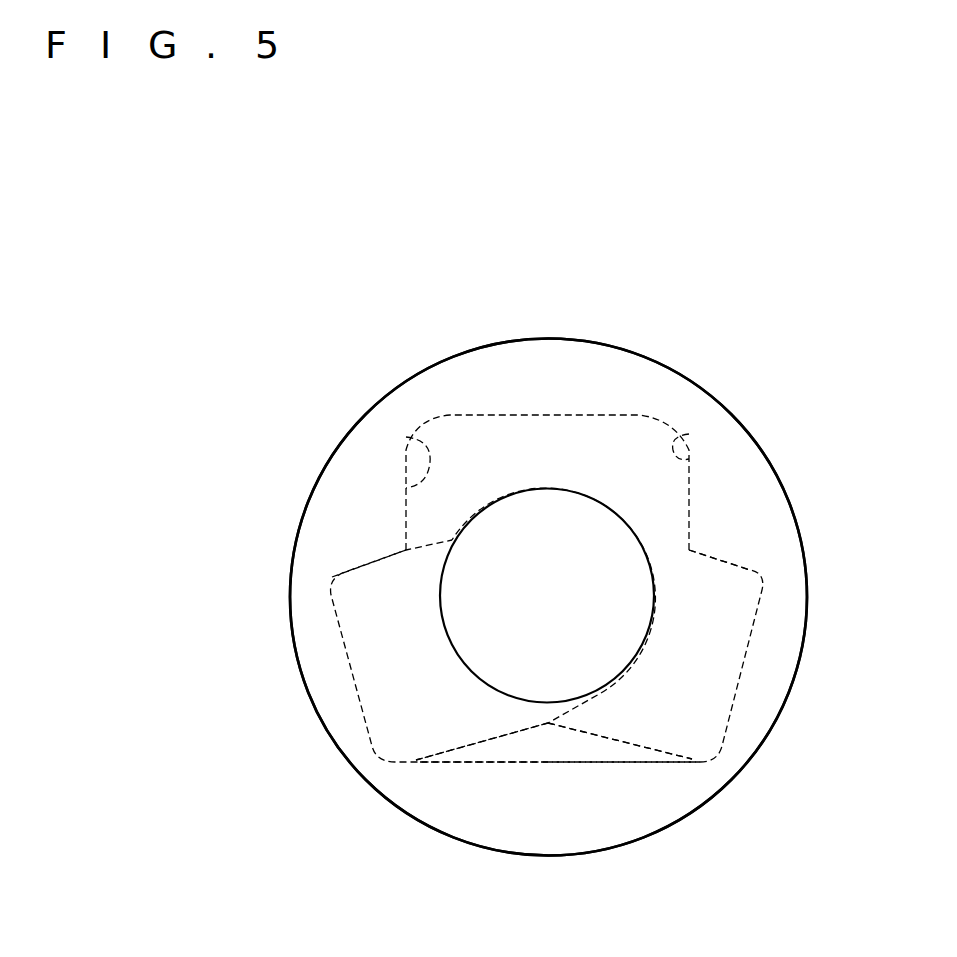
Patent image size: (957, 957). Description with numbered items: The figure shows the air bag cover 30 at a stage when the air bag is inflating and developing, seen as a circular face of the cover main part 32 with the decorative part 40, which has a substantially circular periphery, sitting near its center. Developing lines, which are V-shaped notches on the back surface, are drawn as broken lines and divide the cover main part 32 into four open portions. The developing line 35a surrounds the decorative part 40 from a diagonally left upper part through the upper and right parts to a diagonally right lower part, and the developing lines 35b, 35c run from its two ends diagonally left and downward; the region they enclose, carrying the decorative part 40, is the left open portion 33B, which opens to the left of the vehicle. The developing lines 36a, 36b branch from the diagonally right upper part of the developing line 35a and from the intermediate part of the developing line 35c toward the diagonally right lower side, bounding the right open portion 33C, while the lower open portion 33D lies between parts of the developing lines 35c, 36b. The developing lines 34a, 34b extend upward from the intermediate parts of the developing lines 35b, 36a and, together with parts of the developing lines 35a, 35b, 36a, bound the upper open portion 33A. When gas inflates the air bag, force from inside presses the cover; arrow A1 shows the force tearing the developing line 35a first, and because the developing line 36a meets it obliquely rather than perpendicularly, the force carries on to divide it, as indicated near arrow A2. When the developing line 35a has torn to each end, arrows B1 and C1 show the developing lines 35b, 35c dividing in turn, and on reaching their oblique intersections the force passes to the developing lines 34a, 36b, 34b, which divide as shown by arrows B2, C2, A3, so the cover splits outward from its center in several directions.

The air bag cover 30 is at (668, 362).
The cover main part 32 is at (563, 353).
The upper open portion 33A is at (468, 435).
The left open portion 33B is at (362, 664).
The right open portion 33C is at (727, 644).
The lower open portion 33D is at (547, 736).
The developing line 34a is at (423, 433).
The developing line 34b is at (677, 436).
The developing line 35a is at (657, 573).
The developing line 35b is at (455, 546).
The developing line 35c is at (450, 750).
The developing line 36a is at (707, 556).
The developing line 36b is at (667, 753).
The decorative part 40 is at (474, 606).
The arrow A1 is at (640, 507).
The arrow A2 is at (680, 533).
The arrow A3 is at (703, 466).
The arrow B1 is at (425, 562).
The arrow B2 is at (392, 468).
The arrow C1 is at (540, 712).
The arrow C2 is at (643, 733).